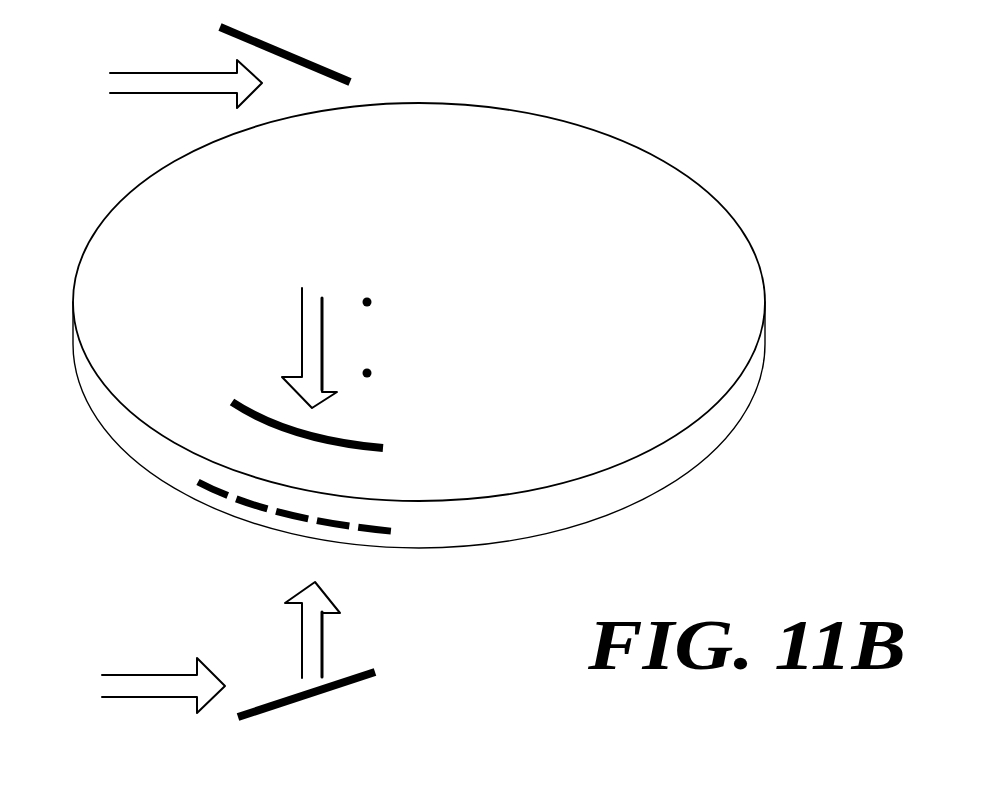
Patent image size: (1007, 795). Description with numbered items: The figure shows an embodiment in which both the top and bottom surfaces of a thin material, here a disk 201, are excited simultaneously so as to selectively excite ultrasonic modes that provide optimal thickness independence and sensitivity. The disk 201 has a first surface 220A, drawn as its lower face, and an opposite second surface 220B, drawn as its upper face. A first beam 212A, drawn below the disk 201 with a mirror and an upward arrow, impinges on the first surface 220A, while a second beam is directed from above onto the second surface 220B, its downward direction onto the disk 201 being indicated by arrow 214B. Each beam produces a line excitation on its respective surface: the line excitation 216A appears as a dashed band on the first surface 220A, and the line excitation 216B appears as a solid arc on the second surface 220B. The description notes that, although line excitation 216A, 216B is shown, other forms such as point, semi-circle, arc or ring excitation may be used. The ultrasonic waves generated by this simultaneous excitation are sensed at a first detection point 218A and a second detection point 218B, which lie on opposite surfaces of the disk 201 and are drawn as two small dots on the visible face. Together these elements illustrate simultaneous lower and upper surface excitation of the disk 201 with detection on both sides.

The disk 201 is at (464, 325).
The first surface 220A is at (718, 450).
The second surface 220B is at (738, 298).
The first detection point 218A is at (376, 364).
The second detection point 218B is at (373, 297).
The line excitation 216A is at (388, 532).
The line excitation 216B is at (360, 441).
The direction of scan toward second surface 214B is at (310, 332).
The first beam 212A is at (320, 632).